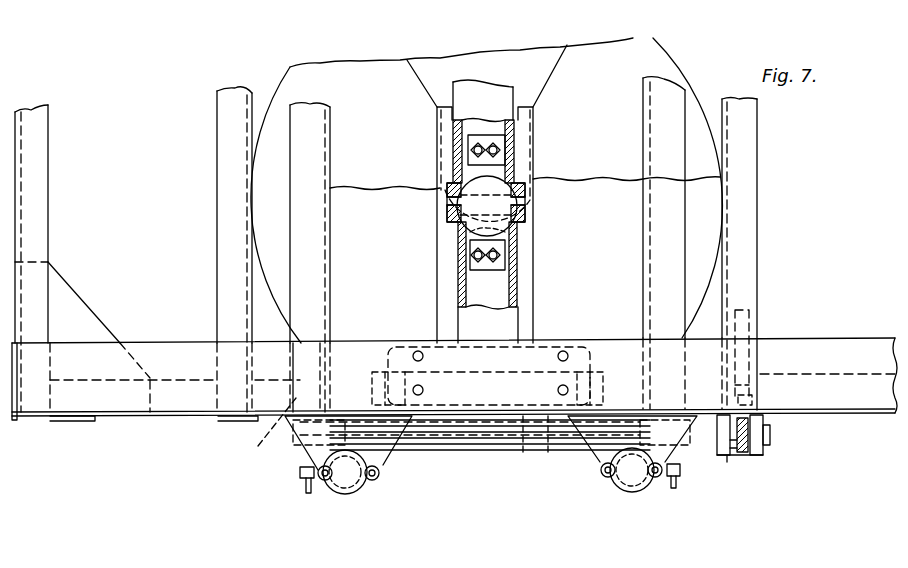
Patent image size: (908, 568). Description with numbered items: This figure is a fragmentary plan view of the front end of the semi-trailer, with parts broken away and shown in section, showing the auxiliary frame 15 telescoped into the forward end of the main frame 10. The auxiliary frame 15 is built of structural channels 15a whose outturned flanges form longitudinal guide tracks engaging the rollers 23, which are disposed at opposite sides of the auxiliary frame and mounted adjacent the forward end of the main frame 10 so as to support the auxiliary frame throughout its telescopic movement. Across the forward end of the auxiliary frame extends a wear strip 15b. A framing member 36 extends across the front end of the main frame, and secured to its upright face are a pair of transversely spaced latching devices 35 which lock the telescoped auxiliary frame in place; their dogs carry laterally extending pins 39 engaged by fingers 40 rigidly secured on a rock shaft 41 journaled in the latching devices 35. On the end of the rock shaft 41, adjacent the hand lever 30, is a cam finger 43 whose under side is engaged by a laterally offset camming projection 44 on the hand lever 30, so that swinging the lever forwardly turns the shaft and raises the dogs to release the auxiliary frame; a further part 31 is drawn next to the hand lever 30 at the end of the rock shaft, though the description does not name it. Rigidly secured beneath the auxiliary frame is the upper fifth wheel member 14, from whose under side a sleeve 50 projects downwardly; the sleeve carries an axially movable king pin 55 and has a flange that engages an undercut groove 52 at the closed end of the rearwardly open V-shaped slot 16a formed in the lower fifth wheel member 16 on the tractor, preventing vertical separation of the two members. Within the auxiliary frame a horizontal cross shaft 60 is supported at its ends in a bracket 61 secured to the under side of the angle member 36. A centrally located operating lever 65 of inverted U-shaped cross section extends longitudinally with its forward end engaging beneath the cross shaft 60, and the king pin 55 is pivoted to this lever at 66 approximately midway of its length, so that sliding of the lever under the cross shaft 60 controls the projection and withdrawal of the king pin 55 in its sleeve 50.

The main frame 10 is at (228, 160).
The upper fifth wheel member 14 is at (606, 261).
The auxiliary frame 15 is at (655, 195).
The structural channels 15a is at (325, 243).
The wear strip 15b is at (563, 482).
The lower fifth wheel member 16 is at (655, 65).
The V-shaped slot 16a is at (558, 60).
The rollers 23 is at (464, 434).
The hand lever 30 is at (745, 452).
The plate 31 is at (770, 442).
The latching devices 35 is at (355, 466).
The framing member 36 is at (795, 347).
The pin 39 is at (306, 480).
The fingers 40 is at (300, 469).
The rock shaft 41 is at (498, 457).
The cam finger 43 is at (731, 458).
The camming projection 44 is at (727, 455).
The sleeve 50 is at (505, 237).
The undercut groove 52 is at (535, 152).
The king pin 55 is at (492, 215).
The cross shaft 60 is at (557, 343).
The bracket 61 is at (430, 343).
The operating lever 65 is at (517, 288).
The pivot 66 is at (520, 200).